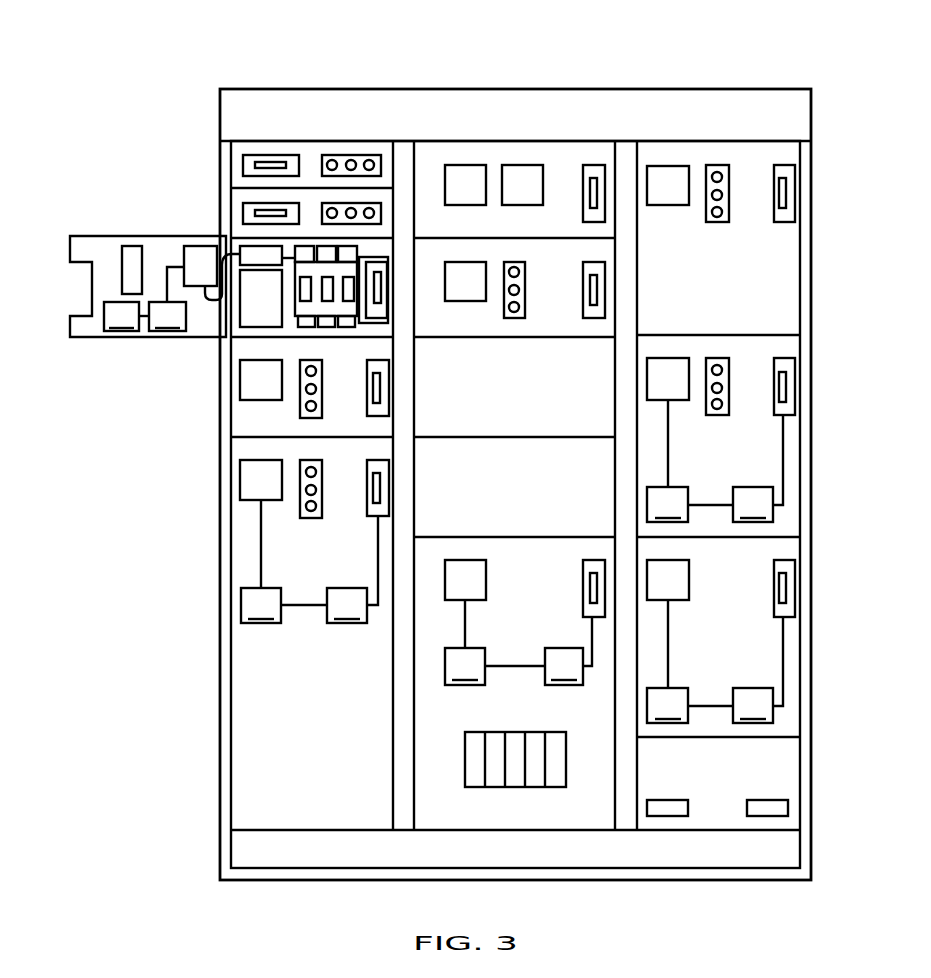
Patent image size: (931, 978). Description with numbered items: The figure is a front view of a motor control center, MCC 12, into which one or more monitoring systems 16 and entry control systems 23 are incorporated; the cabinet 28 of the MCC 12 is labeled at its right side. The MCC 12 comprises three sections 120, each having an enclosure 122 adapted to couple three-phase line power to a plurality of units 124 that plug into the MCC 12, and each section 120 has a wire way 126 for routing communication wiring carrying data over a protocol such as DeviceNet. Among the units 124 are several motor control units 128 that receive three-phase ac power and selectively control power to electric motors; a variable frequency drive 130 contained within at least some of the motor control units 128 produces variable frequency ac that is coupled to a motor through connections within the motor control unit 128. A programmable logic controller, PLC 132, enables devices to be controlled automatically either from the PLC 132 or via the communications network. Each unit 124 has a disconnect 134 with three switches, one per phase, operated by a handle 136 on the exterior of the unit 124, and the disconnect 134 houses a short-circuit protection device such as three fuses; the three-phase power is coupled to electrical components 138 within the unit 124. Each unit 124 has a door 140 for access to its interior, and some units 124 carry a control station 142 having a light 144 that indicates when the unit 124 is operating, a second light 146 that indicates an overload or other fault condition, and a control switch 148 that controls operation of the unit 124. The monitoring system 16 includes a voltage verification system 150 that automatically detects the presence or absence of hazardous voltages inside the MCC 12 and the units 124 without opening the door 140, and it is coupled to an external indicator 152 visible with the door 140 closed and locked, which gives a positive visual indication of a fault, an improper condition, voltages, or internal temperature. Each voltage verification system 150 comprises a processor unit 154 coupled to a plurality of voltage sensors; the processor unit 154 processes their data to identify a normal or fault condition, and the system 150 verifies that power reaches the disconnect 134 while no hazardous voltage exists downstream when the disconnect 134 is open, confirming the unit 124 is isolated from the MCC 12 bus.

The motor control center (MCC) 12 is at (500, 40).
The monitoring system 16 is at (418, 512).
The entry control system 23 is at (443, 512).
The cabinet 28 is at (800, 260).
The section 120 is at (312, 88).
The enclosure 122 is at (219, 117).
The unit 124 is at (304, 234).
The wire way 126 is at (399, 148).
The motor control unit 128 is at (400, 262).
The variable frequency drive 130 is at (243, 660).
The programmable logic controller (PLC) 132 is at (590, 810).
The disconnect 134 is at (338, 258).
The handle 136 is at (270, 210).
The electrical components 138 is at (243, 312).
The door 140 is at (113, 236).
The control station 142 is at (527, 308).
The light 144 is at (133, 246).
The second light 146 is at (322, 490).
The control switch 148 is at (310, 508).
The voltage verification system 150 is at (330, 192).
The indicator 152 is at (184, 258).
The processor unit 154 is at (255, 250).